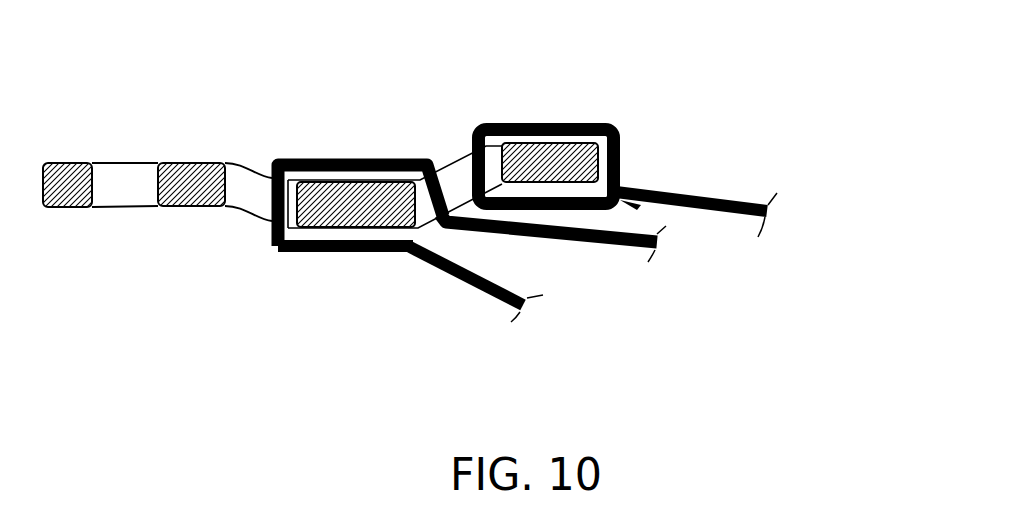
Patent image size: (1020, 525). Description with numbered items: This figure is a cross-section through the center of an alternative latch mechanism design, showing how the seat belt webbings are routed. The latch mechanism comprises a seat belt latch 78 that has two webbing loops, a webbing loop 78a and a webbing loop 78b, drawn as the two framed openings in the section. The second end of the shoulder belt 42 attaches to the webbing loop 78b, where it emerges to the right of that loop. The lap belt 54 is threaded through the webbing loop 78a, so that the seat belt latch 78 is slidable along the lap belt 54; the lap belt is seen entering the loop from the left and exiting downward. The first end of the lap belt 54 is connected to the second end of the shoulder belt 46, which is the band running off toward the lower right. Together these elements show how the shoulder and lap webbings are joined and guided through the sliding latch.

The seat belt latch 78 is at (243, 192).
The webbing loop 78a is at (372, 190).
The webbing loop 78b is at (540, 162).
The shoulder belt 42 is at (705, 197).
The shoulder belt 46 is at (592, 247).
The lap belt 54 is at (453, 274).